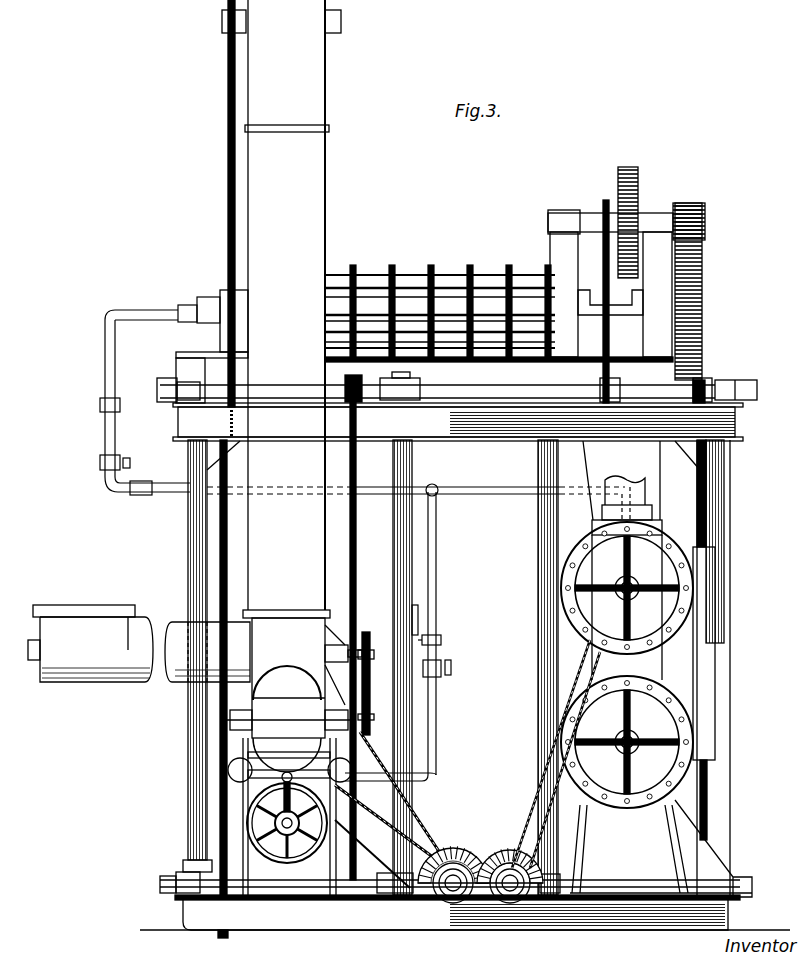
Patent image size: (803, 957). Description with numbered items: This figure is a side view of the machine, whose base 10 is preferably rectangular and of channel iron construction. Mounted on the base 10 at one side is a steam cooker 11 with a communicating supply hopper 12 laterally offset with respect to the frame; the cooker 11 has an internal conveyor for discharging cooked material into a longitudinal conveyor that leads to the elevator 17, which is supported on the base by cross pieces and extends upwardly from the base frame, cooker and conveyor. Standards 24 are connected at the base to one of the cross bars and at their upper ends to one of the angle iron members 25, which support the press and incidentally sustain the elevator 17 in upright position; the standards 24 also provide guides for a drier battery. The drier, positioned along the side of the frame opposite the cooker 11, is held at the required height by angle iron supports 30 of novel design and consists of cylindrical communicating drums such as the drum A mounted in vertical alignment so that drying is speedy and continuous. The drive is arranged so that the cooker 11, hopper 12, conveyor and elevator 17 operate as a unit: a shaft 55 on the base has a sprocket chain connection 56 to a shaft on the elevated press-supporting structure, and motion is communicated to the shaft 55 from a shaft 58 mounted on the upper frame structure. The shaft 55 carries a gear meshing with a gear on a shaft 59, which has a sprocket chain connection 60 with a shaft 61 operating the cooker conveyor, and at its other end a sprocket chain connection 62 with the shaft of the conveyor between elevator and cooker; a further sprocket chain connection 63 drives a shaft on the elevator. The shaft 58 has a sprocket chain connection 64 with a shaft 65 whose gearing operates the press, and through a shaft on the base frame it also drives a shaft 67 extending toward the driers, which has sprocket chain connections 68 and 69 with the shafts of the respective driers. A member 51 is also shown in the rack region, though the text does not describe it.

The base 10 is at (383, 917).
The steam cooker 11 is at (278, 692).
The supply hopper 12 is at (110, 668).
The elevator 17 is at (305, 205).
The standards 24 is at (407, 556).
The angle iron members 25 is at (485, 422).
The angle iron supports 30 is at (665, 854).
The rack / grate 51 is at (341, 394).
The shaft 55 is at (157, 890).
The sprocket chain connection 56 is at (357, 565).
The shaft 58 is at (531, 395).
The shaft 59 is at (452, 889).
The sprocket chain connection 60 is at (412, 813).
The shaft 61 is at (370, 688).
The sprocket chain connection 62 is at (418, 837).
The sprocket chain connection 63 is at (228, 232).
The sprocket chain connection 64 is at (612, 337).
The shaft 65 is at (730, 508).
The shaft 67 is at (504, 848).
The sprocket chain connection 68 is at (540, 774).
The sprocket chain connection 69 is at (538, 814).
The cylindrical drum A is at (632, 578).